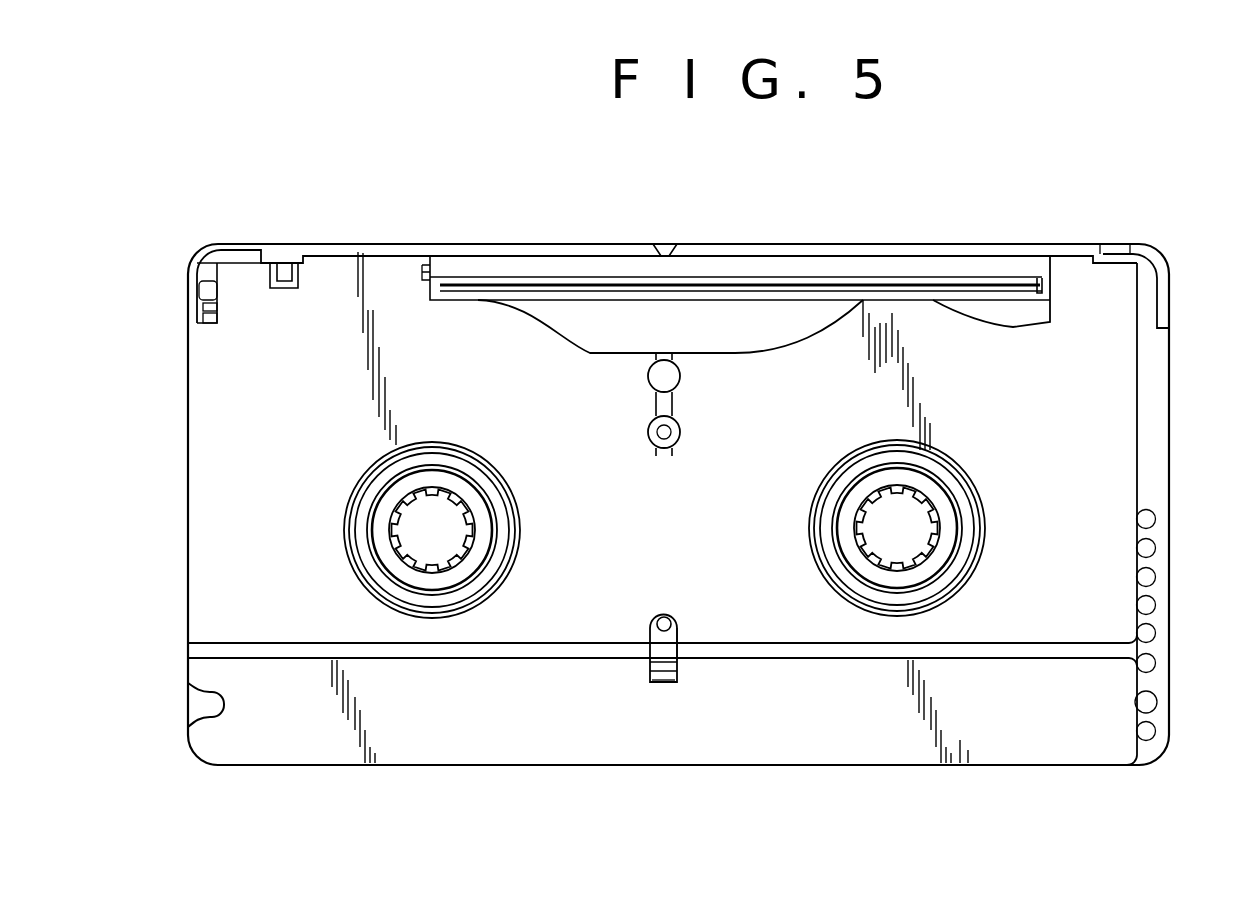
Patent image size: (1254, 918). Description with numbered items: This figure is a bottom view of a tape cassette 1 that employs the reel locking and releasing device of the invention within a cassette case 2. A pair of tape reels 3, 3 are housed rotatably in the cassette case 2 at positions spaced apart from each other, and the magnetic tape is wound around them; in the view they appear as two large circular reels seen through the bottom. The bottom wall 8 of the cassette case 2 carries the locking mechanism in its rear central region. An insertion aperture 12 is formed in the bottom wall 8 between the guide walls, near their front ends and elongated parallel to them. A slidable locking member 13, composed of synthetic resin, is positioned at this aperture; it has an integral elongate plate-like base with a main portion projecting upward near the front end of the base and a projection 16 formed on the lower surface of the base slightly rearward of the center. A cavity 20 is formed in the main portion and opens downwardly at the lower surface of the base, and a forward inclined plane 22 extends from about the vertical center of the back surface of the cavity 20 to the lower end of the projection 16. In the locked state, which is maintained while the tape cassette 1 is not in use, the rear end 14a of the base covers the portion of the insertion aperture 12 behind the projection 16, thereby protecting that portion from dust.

The tape cassette 1 is at (1058, 188).
The cassette case 2 is at (1170, 422).
The tape reel 3 is at (380, 503).
The bottom wall 8 is at (1120, 387).
The insertion aperture 12 is at (660, 638).
The slidable locking member 13 is at (677, 632).
The rear end of the base 14a is at (662, 675).
The projection 16 is at (677, 677).
The cavity 20 is at (665, 622).
The forward inclined plane 22 is at (680, 650).